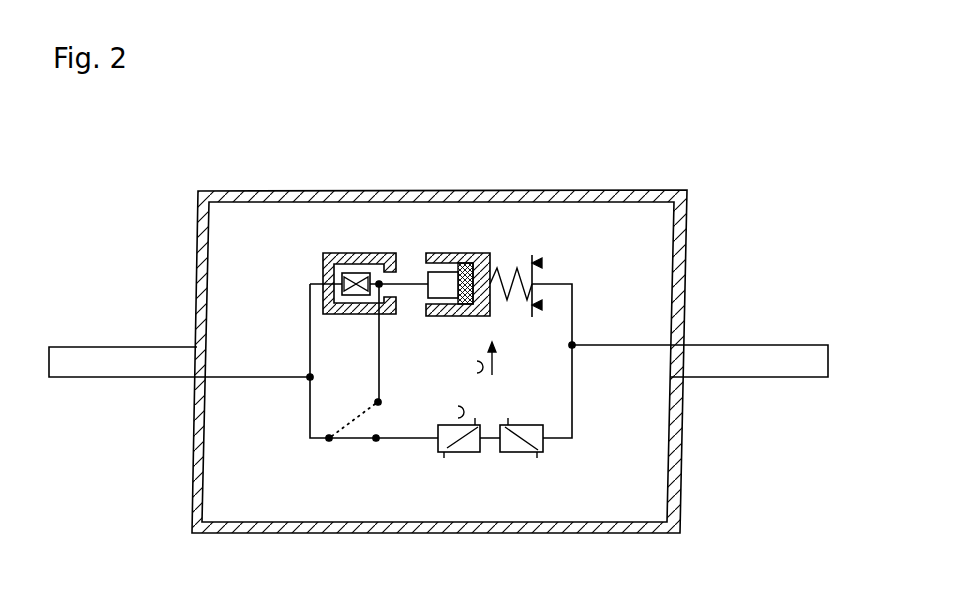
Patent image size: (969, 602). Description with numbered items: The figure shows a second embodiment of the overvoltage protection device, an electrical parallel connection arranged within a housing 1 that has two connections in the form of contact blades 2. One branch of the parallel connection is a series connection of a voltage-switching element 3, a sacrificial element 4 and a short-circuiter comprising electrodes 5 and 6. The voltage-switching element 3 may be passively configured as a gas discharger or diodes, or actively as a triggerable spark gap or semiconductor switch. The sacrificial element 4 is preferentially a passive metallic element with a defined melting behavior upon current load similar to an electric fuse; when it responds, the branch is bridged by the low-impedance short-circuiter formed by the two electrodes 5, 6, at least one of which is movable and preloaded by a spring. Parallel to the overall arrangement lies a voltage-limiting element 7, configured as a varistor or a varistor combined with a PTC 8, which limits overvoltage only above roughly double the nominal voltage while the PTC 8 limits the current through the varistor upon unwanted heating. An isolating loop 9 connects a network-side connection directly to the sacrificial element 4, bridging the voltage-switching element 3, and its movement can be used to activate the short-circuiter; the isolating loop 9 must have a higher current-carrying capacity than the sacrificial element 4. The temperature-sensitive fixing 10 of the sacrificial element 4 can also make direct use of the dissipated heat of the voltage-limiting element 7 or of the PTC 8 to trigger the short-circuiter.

The housing 1 is at (583, 191).
The contact blades 2 is at (108, 335).
The voltage-switching element 3 is at (350, 277).
The sacrificial element 4 is at (434, 300).
The electrode 5 is at (360, 256).
The electrode 6 is at (442, 254).
The voltage-limiting element 7 is at (542, 443).
The PTC 8 is at (470, 455).
The isolating loop 9 is at (345, 442).
The temperature-sensitive fixing 10 is at (463, 271).